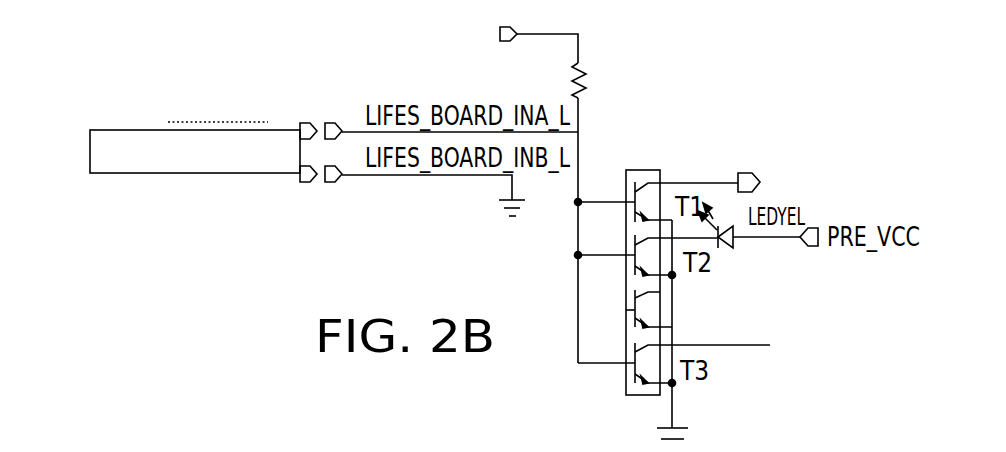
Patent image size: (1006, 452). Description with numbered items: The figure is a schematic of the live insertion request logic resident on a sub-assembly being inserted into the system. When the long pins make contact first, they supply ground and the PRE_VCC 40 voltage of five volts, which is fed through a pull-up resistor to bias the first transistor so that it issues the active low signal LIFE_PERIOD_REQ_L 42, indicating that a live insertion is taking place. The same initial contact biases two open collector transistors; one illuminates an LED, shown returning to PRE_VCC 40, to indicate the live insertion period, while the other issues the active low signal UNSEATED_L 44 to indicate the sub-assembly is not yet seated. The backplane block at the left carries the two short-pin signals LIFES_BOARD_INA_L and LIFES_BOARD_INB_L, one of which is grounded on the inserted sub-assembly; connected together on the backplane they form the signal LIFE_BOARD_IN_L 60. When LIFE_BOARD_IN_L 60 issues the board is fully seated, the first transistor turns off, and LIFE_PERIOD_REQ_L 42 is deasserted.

The LIFE_BOARD_IN_L 60 is at (135, 130).
The PRE_VCC 40 is at (553, 36).
The LIFE_PERIOD_REQ_L 42 is at (745, 172).
The UNSEATED_L 44 is at (745, 347).